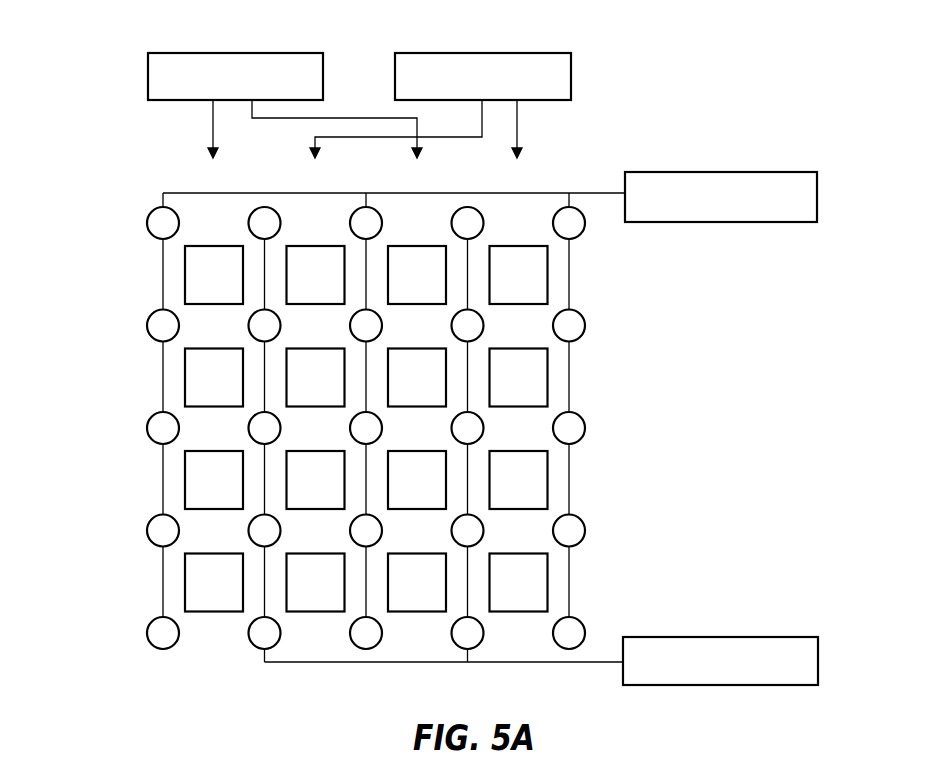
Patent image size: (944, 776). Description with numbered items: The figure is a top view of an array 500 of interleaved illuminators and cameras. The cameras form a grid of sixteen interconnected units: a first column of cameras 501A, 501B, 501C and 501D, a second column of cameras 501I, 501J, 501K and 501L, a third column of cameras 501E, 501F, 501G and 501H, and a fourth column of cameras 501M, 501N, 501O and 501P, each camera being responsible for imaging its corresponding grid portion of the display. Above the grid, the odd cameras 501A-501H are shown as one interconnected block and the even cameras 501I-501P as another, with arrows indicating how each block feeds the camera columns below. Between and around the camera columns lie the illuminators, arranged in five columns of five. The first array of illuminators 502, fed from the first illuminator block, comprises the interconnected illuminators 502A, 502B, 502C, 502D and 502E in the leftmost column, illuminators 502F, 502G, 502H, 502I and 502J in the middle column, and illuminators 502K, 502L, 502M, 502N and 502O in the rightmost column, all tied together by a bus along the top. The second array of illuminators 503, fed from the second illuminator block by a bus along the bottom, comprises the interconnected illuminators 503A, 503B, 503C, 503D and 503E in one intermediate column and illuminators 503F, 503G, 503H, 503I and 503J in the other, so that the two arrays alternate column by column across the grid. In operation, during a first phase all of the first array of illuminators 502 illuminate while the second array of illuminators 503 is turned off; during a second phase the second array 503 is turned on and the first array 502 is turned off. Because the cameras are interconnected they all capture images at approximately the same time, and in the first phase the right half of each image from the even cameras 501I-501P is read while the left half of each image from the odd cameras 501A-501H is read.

The array 500 is at (81, 166).
The odd cameras 501A-501H is at (253, 53).
The even cameras 501I-501P is at (505, 53).
The camera 501A is at (191, 286).
The camera 501B is at (191, 388).
The camera 501C is at (191, 491).
The camera 501D is at (191, 594).
The camera 501E is at (394, 286).
The camera 501F is at (394, 388).
The camera 501G is at (394, 491).
The camera 501H is at (394, 594).
The camera 501I is at (295, 286).
The camera 501J is at (293, 388).
The camera 501K is at (292, 491).
The camera 501L is at (293, 594).
The camera 501M is at (494, 286).
The camera 501N is at (542, 388).
The camera 501O is at (542, 491).
The camera 501P is at (542, 594).
The first array of illuminators 502 is at (727, 222).
The illuminator 502A is at (147, 226).
The illuminator 502B is at (147, 328).
The illuminator 502C is at (147, 431).
The illuminator 502D is at (147, 534).
The illuminator 502E is at (147, 636).
The illuminator 502F is at (350, 226).
The illuminator 502G is at (350, 328).
The illuminator 502H is at (350, 431).
The illuminator 502I is at (350, 534).
The illuminator 502J is at (350, 636).
The illuminator 502K is at (553, 226).
The illuminator 502L is at (553, 328).
The illuminator 502M is at (553, 431).
The illuminator 502N is at (553, 534).
The illuminator 502O is at (553, 636).
The second array of illuminators 503 is at (725, 685).
The illuminator 503A is at (248, 226).
The illuminator 503B is at (248, 328).
The illuminator 503C is at (248, 431).
The illuminator 503D is at (248, 534).
The illuminator 503E is at (248, 636).
The illuminator 503F is at (452, 226).
The illuminator 503G is at (452, 328).
The illuminator 503H is at (452, 431).
The illuminator 503I is at (452, 534).
The illuminator 503J is at (452, 636).